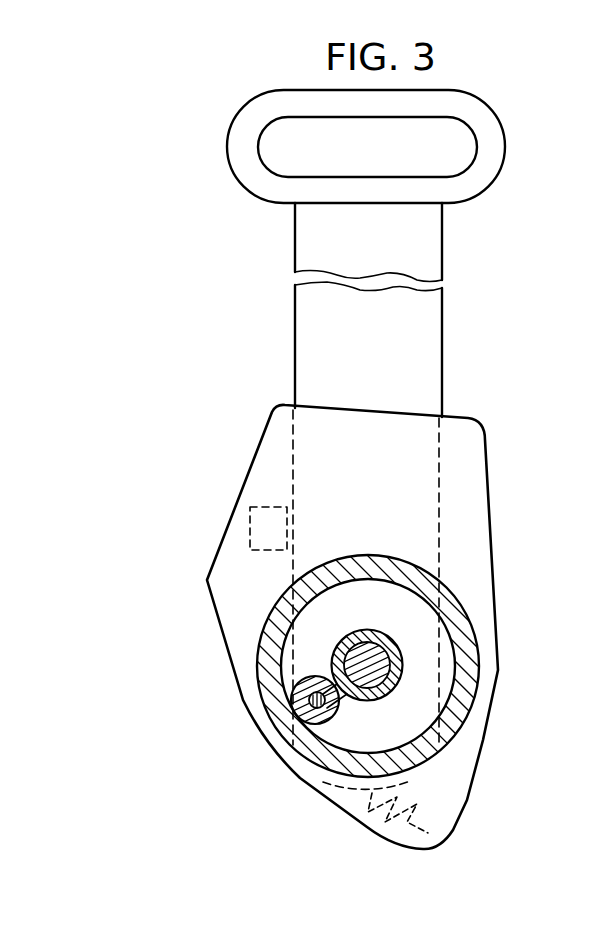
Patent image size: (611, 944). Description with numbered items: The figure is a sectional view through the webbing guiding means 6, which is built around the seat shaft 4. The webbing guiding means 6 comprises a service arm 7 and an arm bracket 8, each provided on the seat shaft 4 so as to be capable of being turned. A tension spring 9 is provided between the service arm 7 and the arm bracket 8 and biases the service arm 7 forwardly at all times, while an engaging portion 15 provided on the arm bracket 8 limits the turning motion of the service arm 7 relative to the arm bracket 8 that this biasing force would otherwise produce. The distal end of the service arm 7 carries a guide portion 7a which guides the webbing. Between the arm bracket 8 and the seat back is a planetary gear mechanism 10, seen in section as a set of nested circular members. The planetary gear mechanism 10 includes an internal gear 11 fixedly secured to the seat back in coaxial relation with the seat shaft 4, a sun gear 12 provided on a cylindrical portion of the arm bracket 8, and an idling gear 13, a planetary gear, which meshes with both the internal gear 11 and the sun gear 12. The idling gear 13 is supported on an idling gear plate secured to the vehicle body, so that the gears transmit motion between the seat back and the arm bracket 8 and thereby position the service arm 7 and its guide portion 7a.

The seat shaft 4 is at (365, 693).
The webbing guiding means 6 is at (228, 440).
The service arm 7 is at (442, 333).
The guide portion 7a is at (483, 170).
The arm bracket 8 is at (475, 470).
The tension spring 9 is at (368, 812).
The planetary gear mechanism 10 is at (316, 653).
The internal gear 11 is at (315, 747).
The sun gear 12 is at (357, 698).
The idling gear 13 is at (290, 698).
The engaging portion 15 is at (248, 523).